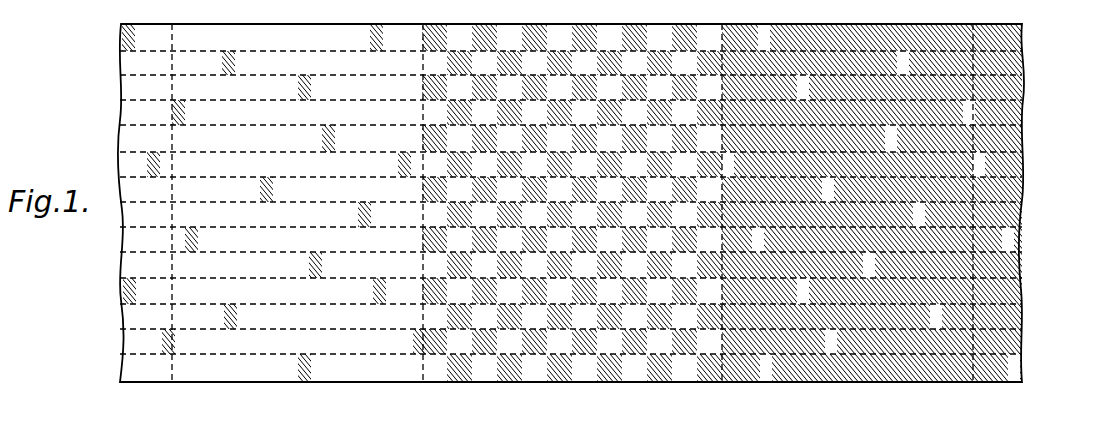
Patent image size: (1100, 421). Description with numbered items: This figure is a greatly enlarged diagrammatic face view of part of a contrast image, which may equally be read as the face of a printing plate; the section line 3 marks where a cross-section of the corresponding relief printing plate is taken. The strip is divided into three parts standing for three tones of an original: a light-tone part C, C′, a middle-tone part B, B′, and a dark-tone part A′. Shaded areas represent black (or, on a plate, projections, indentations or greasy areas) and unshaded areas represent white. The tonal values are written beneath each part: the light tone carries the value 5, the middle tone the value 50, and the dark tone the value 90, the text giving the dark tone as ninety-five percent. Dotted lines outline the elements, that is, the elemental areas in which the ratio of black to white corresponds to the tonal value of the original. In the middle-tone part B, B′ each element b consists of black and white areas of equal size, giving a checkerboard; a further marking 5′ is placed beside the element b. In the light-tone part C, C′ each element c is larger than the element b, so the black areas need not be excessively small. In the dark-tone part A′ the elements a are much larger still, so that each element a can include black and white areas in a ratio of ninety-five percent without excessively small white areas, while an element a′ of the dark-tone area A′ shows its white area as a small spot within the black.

The section line 3 is at (112, 290).
The light-tone tonal value 5 is at (571, 235).
The middle-tone tonal value 50 is at (509, 220).
The dark-tone tonal value 90 is at (571, 321).
The weft float 5′ is at (812, 222).
The light-tone part C is at (372, 382).
The light-tone part C′ is at (266, 222).
The light-tone element c is at (395, 370).
The middle-tone part B is at (637, 381).
The middle-tone part B′ is at (628, 222).
The middle-tone element b is at (688, 343).
The dark-tone part A′ is at (938, 380).
The dark-tone element a is at (960, 364).
The dark-tone element a′ is at (997, 387).